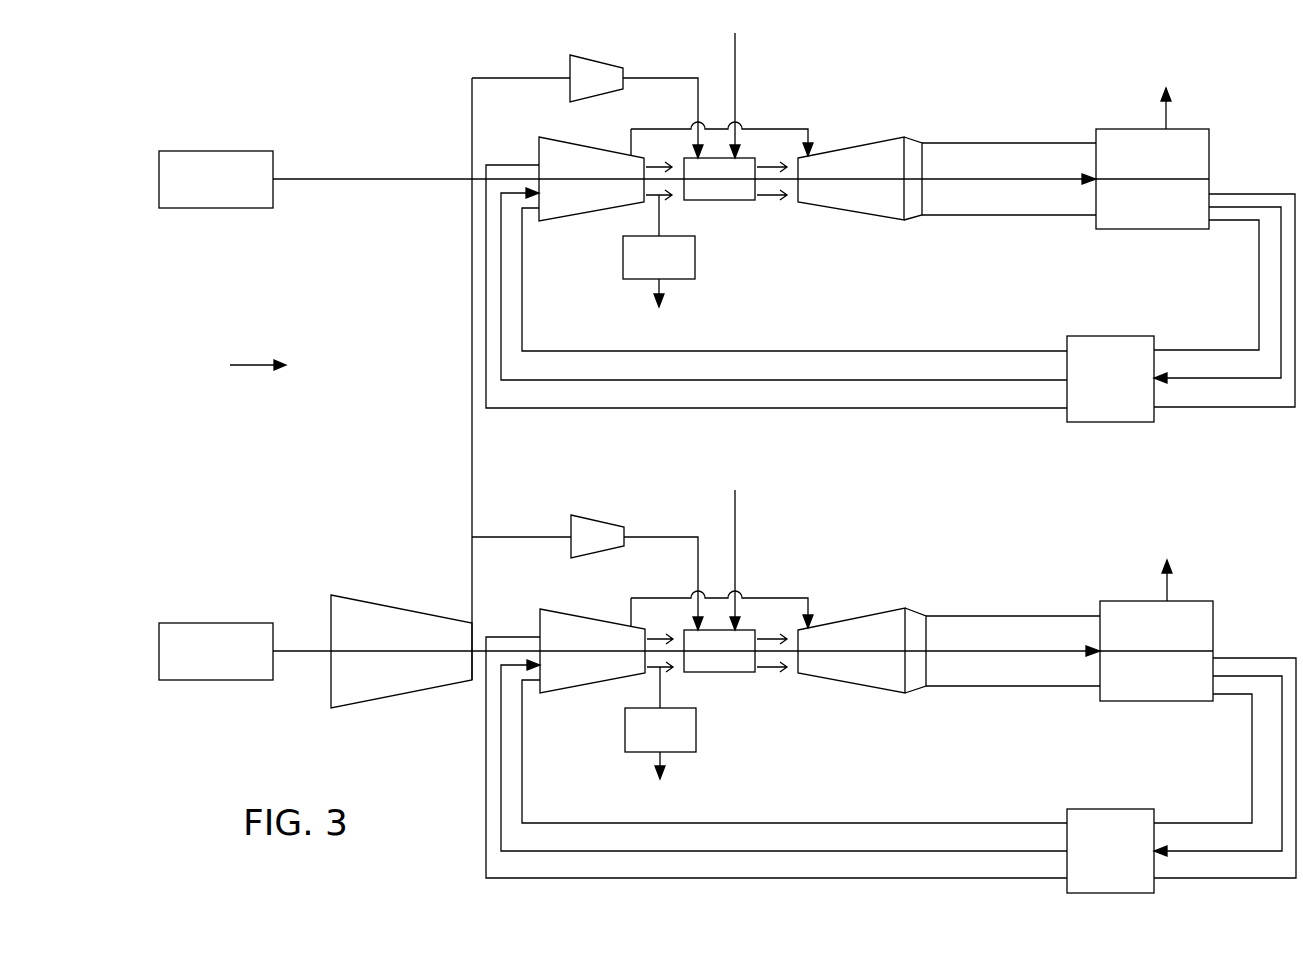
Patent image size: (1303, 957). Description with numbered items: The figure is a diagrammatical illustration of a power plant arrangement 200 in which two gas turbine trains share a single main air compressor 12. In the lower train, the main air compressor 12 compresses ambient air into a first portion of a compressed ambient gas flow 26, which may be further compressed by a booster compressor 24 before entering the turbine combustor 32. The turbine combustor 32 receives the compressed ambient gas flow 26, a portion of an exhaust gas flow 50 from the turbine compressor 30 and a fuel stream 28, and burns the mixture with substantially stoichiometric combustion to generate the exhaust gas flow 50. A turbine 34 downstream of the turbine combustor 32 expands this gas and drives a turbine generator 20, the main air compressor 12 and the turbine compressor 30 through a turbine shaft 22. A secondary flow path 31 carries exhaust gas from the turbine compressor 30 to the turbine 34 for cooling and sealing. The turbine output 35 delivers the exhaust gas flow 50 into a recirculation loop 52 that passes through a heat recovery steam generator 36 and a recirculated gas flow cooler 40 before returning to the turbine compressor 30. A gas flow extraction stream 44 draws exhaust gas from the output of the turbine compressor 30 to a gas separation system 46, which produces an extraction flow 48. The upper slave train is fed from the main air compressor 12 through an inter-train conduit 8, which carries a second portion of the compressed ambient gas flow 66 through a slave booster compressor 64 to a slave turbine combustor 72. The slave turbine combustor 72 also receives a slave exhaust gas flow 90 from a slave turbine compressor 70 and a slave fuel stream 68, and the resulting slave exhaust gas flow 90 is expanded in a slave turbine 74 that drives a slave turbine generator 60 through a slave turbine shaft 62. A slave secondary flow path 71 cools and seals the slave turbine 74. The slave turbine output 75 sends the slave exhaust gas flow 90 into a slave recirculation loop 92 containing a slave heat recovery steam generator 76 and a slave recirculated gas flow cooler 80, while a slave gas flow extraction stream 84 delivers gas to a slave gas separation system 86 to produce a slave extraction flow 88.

The power plant arrangement 200 is at (239, 366).
The inter-train conduit 8 is at (472, 393).
The main air compressor 12 is at (386, 604).
The turbine generator 20 is at (222, 623).
The turbine shaft 22 is at (313, 651).
The booster compressor 24 is at (606, 515).
The compressed ambient gas flow 26 is at (698, 560).
The fuel stream 28 is at (737, 561).
The turbine compressor 30 is at (592, 612).
The secondary flow path 31 is at (783, 595).
The turbine combustor 32 is at (743, 675).
The turbine 34 is at (843, 617).
The turbine output 35 is at (913, 693).
The heat recovery steam generator 36 is at (1126, 600).
The recirculated gas flow cooler 40 is at (1110, 808).
The gas flow extraction stream 44 is at (663, 694).
The gas separation system 46 is at (625, 724).
The extraction flow 48 is at (660, 779).
The exhaust gas flow 50 is at (953, 648).
The recirculation loop 52 is at (960, 687).
The slave turbine generator 60 is at (220, 151).
The slave turbine shaft 62 is at (395, 179).
The slave booster compressor 64 is at (612, 66).
The compressed ambient gas flow 66 is at (698, 93).
The slave fuel stream 68 is at (737, 93).
The slave turbine compressor 70 is at (589, 144).
The slave secondary flow path 71 is at (783, 125).
The slave turbine combustor 72 is at (742, 203).
The slave turbine 74 is at (843, 145).
The slave turbine output 75 is at (913, 221).
The slave heat recovery steam generator 76 is at (1122, 128).
The slave recirculated gas flow cooler 80 is at (1110, 335).
The slave gas flow extraction stream 84 is at (663, 222).
The slave gas separation system 86 is at (623, 252).
The slave extraction flow 88 is at (660, 307).
The slave exhaust gas flow 90 is at (953, 177).
The slave recirculation loop 92 is at (960, 217).